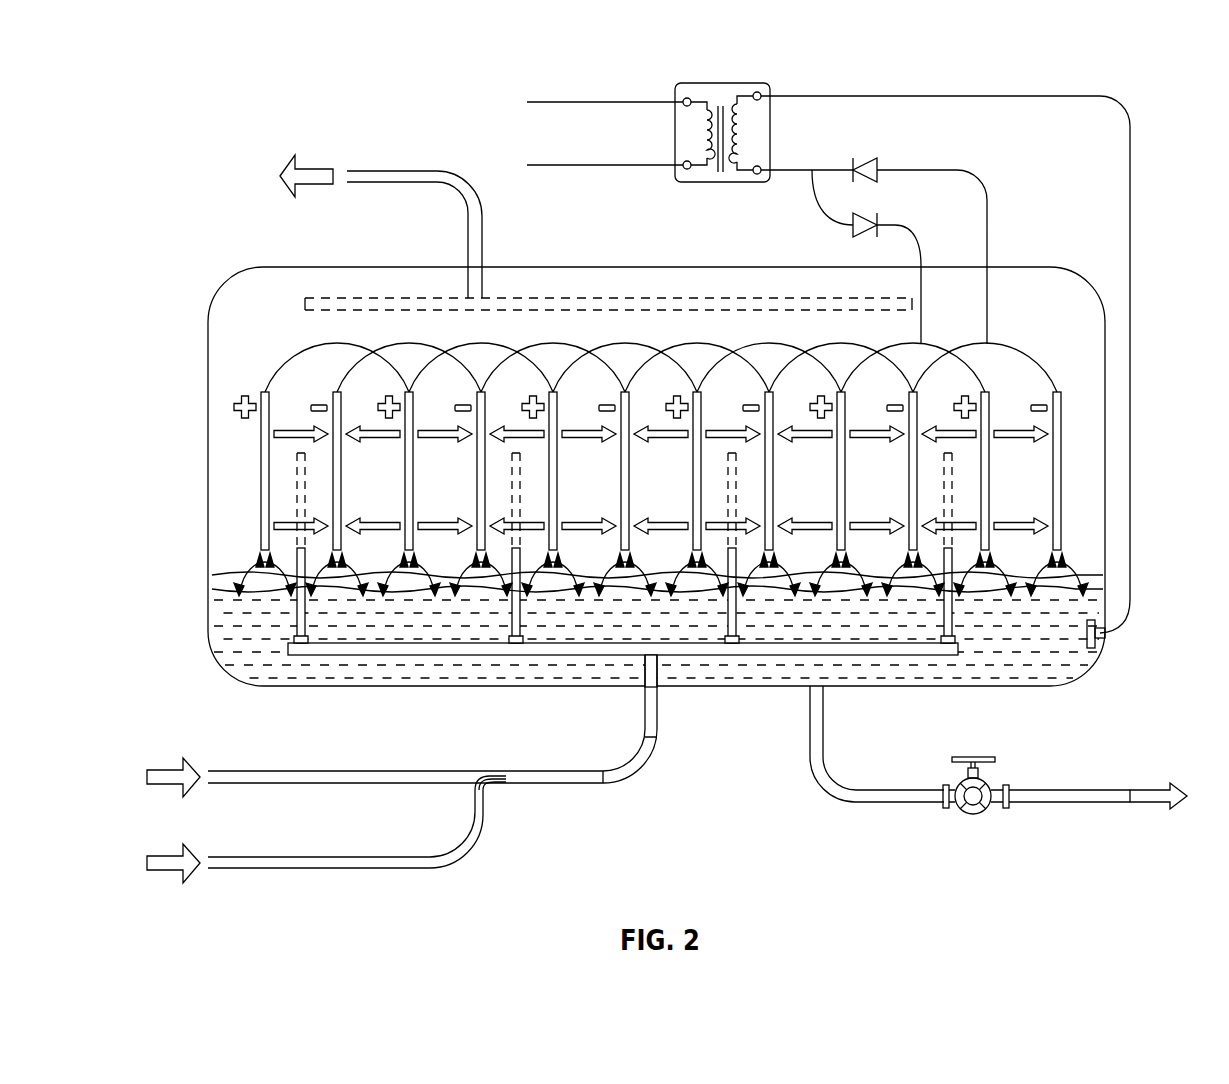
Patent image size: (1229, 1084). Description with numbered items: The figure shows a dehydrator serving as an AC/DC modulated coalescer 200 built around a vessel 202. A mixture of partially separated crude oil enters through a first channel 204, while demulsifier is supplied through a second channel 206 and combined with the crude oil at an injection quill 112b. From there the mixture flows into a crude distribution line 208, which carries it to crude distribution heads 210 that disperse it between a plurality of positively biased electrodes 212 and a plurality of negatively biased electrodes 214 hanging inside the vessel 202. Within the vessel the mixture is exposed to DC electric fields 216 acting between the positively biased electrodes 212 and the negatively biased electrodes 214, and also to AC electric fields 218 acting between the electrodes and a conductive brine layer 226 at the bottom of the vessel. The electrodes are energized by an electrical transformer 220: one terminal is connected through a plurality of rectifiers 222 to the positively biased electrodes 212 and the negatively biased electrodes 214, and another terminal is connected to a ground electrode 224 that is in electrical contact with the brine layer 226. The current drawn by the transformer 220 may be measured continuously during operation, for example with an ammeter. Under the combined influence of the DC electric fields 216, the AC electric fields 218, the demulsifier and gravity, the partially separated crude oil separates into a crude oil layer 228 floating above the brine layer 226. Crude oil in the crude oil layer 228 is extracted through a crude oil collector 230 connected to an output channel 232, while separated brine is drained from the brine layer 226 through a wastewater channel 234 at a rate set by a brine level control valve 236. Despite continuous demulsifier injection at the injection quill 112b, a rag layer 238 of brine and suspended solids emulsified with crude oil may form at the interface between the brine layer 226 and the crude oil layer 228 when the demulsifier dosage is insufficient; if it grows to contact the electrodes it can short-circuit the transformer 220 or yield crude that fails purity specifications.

The AC/DC modulated coalescer 200 is at (1133, 87).
The vessel 202 is at (208, 330).
The first channel 204 is at (330, 770).
The second channel 206 is at (400, 869).
The injection quill 112b is at (490, 787).
The crude distribution line 208 is at (700, 656).
The crude distribution heads 210 is at (298, 505).
The positively biased electrodes 212 is at (989, 403).
The negatively biased electrodes 214 is at (1062, 468).
The DC electric fields 216 is at (1043, 522).
The AC electric fields 218 is at (1080, 565).
The electrical transformer 220 is at (718, 83).
The rectifiers 222 is at (873, 224).
The ground electrode 224 is at (1104, 628).
The brine layer 226 is at (215, 664).
The crude oil layer 228 is at (243, 347).
The crude oil collector 230 is at (325, 296).
The output channel 232 is at (355, 170).
The wastewater channel 234 is at (1112, 803).
The brine level control valve 236 is at (944, 808).
The rag layer 238 is at (238, 590).